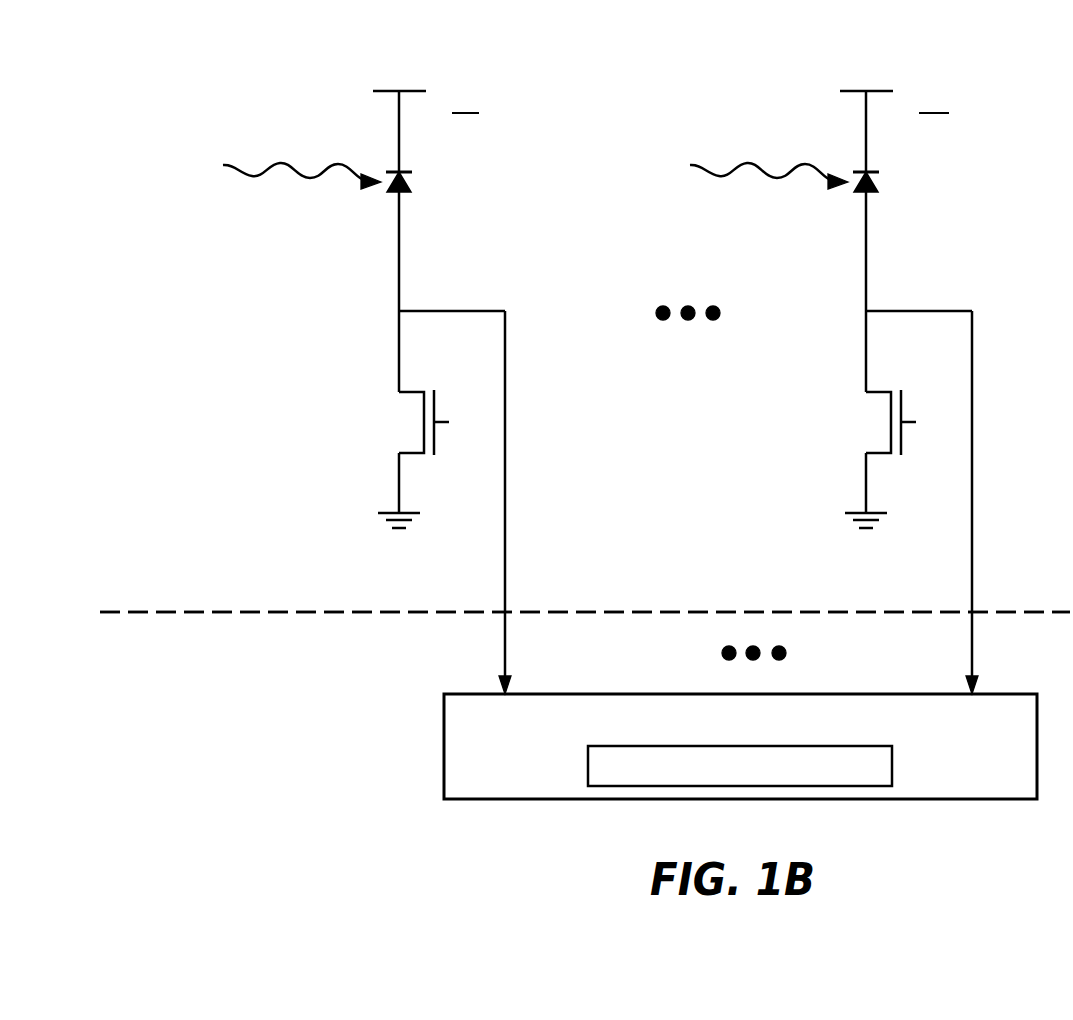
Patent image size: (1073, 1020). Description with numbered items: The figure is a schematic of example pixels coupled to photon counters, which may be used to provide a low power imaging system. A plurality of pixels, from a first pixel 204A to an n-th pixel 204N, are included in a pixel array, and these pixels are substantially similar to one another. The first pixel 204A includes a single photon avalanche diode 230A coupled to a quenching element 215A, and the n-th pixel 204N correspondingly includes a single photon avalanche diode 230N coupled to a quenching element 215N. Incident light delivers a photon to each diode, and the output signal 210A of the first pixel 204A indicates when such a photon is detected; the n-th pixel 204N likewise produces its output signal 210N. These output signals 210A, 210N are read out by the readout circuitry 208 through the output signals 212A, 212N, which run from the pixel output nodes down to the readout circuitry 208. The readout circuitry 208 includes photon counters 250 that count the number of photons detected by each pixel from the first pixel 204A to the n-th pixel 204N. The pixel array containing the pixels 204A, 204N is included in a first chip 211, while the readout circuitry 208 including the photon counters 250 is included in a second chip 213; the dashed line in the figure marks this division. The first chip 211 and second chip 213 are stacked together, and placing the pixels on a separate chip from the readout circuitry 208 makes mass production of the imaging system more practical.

The pixel P1 204A is at (466, 69).
The pixel Pn 204N is at (933, 69).
The single photon avalanche diode 230A is at (414, 176).
The single photon avalanche diode 230N is at (881, 176).
The output signal VOUT 210A is at (483, 284).
The output signal VOUT 210N is at (950, 284).
The quenching element MQ 215A is at (382, 403).
The quenching element MQ 215N is at (851, 403).
The output signal 212A is at (507, 664).
The output signal 212N is at (974, 664).
The first chip 211 is at (585, 591).
The second chip 213 is at (585, 640).
The readout circuitry 208 is at (893, 736).
The photon counters 250 is at (884, 778).